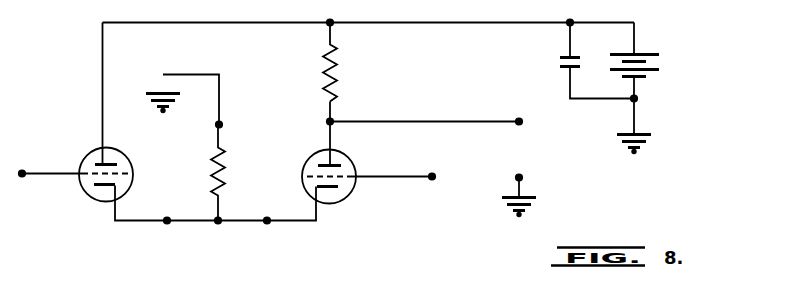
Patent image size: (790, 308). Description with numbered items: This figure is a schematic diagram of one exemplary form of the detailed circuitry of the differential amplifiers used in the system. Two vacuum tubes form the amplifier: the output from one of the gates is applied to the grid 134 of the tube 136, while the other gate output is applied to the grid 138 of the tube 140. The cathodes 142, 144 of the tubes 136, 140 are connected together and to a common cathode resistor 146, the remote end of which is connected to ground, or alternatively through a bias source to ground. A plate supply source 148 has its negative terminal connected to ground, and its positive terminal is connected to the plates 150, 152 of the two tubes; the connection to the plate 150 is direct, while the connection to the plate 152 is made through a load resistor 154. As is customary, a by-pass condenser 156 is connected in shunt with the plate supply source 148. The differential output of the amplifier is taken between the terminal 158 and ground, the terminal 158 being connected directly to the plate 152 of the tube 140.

The grid 134 is at (84, 167).
The tube 136 is at (97, 151).
The grid 138 is at (346, 178).
The tube 140 is at (345, 157).
The cathode 142 is at (93, 184).
The cathode 144 is at (333, 185).
The cathode resistor 146 is at (221, 172).
The plate supply source 148 is at (656, 50).
The plate 150 is at (112, 156).
The plate 152 is at (320, 158).
The load resistor 154 is at (334, 50).
The by-pass condenser 156 is at (556, 55).
The terminal 158 is at (514, 115).